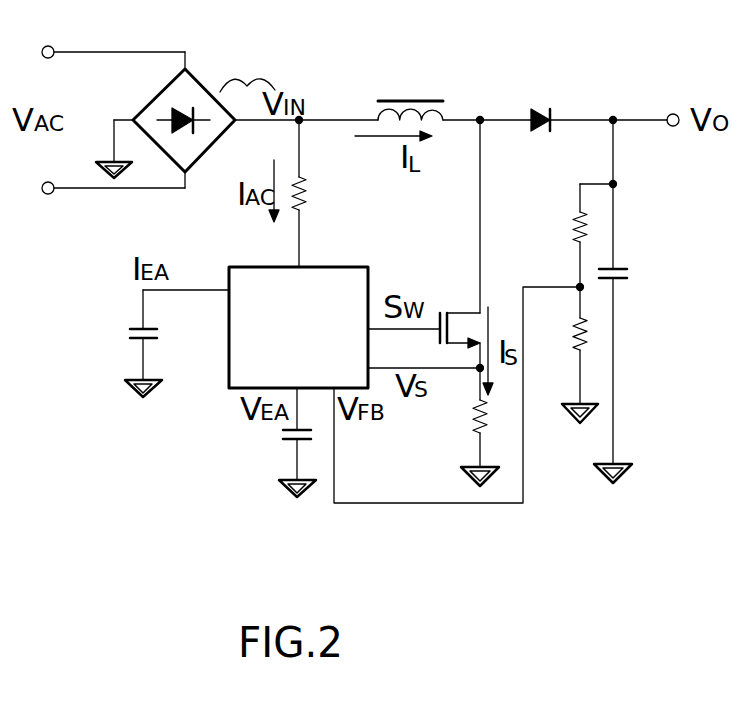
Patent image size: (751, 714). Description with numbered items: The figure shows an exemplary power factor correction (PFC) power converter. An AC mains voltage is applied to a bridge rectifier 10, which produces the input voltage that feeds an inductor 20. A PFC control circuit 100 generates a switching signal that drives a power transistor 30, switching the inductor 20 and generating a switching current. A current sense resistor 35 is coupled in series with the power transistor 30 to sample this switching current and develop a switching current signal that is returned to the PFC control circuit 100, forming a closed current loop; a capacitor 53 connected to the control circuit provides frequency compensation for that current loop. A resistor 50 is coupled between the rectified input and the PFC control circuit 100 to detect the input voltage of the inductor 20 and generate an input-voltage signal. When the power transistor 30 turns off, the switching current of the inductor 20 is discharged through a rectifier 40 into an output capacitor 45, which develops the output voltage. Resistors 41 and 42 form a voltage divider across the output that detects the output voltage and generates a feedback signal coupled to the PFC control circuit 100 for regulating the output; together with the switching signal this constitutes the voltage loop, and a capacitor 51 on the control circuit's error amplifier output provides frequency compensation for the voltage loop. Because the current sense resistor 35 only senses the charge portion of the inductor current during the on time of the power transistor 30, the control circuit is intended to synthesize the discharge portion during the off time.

The bridge rectifier 10 is at (192, 72).
The inductor 20 is at (410, 90).
The power transistor 30 is at (424, 310).
The current sense resistor 35 is at (463, 443).
The rectifier 40 is at (545, 99).
The resistor 41 is at (558, 235).
The resistor 42 is at (565, 355).
The output capacitor 45 is at (632, 367).
The resistor 50 is at (320, 193).
The capacitor 51 is at (282, 442).
The capacitor 53 is at (177, 343).
The PFC control circuit 100 is at (229, 267).